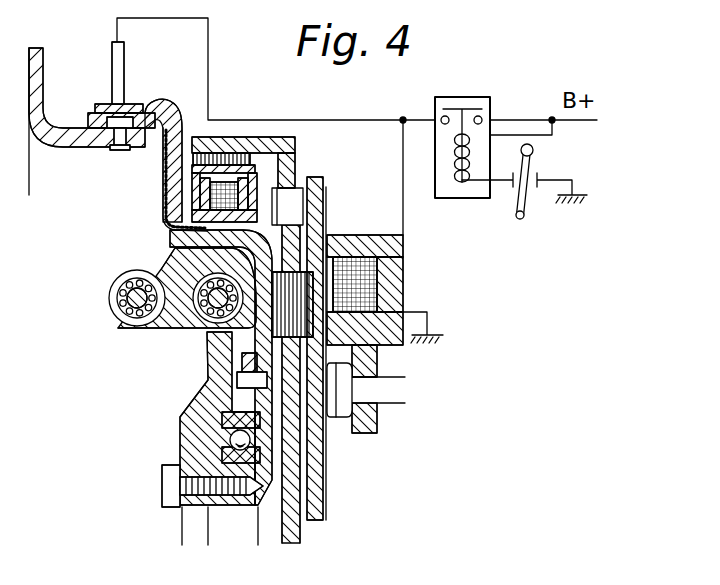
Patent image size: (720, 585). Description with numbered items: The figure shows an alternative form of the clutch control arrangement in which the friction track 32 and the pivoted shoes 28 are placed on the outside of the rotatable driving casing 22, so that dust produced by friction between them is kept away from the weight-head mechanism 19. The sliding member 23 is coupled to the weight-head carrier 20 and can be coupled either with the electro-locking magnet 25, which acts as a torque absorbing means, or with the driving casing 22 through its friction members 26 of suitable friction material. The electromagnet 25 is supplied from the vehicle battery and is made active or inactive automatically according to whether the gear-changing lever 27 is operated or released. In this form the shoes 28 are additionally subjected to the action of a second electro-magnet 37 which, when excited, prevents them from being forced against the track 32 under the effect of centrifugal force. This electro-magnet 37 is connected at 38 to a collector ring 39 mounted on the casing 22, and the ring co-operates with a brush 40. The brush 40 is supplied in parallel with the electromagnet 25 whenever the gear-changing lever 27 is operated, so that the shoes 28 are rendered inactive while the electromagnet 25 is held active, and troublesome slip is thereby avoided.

The weight-head mechanism 19 is at (182, 322).
The weight-head carrier 20 is at (225, 507).
The rotatable driving casing 22 is at (69, 148).
The sliding member 23 is at (322, 228).
The electro-locking magnet 25 is at (372, 285).
The friction members 26 is at (330, 337).
The gear-changing lever 27 is at (531, 165).
The shoes 28 is at (250, 160).
The friction track 32 is at (232, 152).
The electro-magnet 37 is at (243, 183).
The connection 38 is at (163, 191).
The collector ring 39 is at (100, 107).
The brush 40 is at (121, 70).